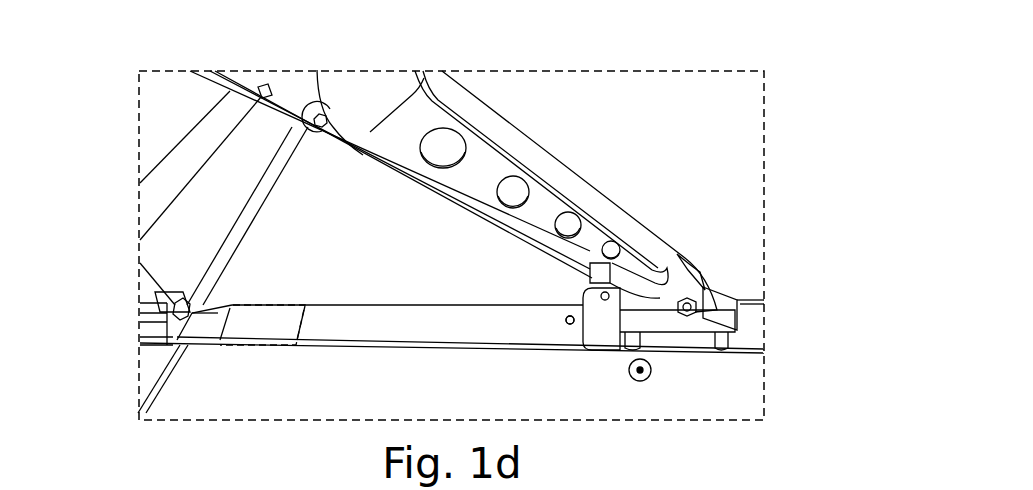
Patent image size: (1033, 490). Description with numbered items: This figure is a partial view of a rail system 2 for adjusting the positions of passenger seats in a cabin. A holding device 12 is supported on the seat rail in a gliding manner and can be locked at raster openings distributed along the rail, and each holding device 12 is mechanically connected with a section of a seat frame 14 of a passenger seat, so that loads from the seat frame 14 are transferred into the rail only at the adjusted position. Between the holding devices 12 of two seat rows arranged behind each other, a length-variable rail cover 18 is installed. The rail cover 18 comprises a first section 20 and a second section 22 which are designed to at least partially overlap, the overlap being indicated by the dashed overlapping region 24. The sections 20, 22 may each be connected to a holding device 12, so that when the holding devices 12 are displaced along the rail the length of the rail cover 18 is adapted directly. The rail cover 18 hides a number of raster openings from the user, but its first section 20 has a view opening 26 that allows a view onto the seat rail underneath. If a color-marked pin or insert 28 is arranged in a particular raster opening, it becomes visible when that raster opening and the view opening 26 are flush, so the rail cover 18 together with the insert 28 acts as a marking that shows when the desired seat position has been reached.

The rail system 2 is at (592, 70).
The holding device 12 is at (725, 293).
The seat frame 14 is at (545, 200).
The rail cover 18 is at (380, 337).
The first section 20 is at (335, 334).
The second section 22 is at (215, 334).
The overlapping region 24 is at (250, 334).
The view opening 26 is at (562, 319).
The insert 28 is at (573, 327).